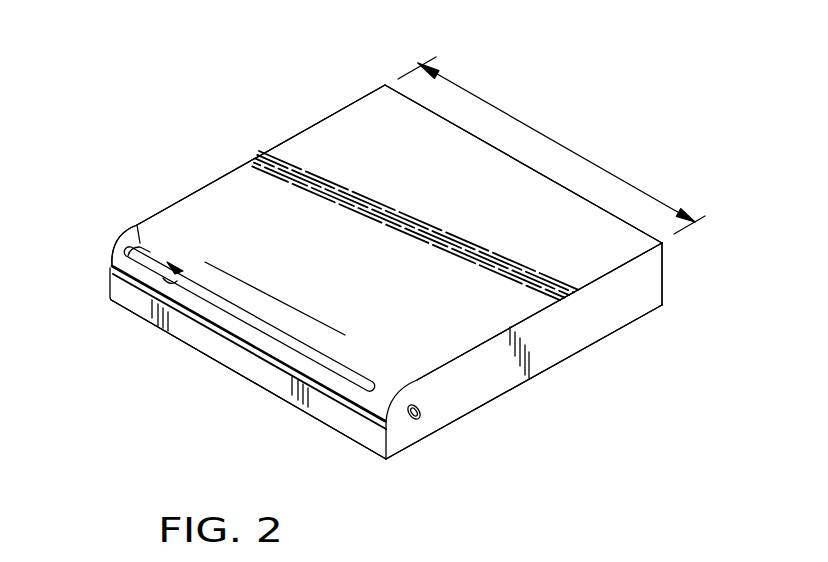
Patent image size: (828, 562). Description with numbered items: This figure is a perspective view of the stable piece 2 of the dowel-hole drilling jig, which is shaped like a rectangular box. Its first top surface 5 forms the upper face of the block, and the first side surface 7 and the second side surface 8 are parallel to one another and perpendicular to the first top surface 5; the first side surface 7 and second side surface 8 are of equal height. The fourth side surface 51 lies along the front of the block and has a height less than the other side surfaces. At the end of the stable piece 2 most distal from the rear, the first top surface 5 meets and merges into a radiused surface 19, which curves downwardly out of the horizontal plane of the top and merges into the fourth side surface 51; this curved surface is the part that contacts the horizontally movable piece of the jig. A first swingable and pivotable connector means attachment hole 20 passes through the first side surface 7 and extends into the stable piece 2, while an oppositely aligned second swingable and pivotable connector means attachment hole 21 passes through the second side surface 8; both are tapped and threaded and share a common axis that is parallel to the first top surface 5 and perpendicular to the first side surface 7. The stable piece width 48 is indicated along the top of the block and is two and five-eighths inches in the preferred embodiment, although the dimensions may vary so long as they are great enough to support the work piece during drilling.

The stable piece 2 is at (375, 272).
The first top surface 5 is at (224, 207).
The first side surface 7 is at (557, 338).
The second side surface 8 is at (208, 146).
The radiused surface 19 is at (235, 318).
The first swingable and pivotable connector means attachment hole 20 is at (417, 418).
The second swingable and pivotable connector means attachment hole 21 is at (135, 219).
The stable piece width 48 is at (560, 142).
The fourth side surface 51 is at (250, 367).